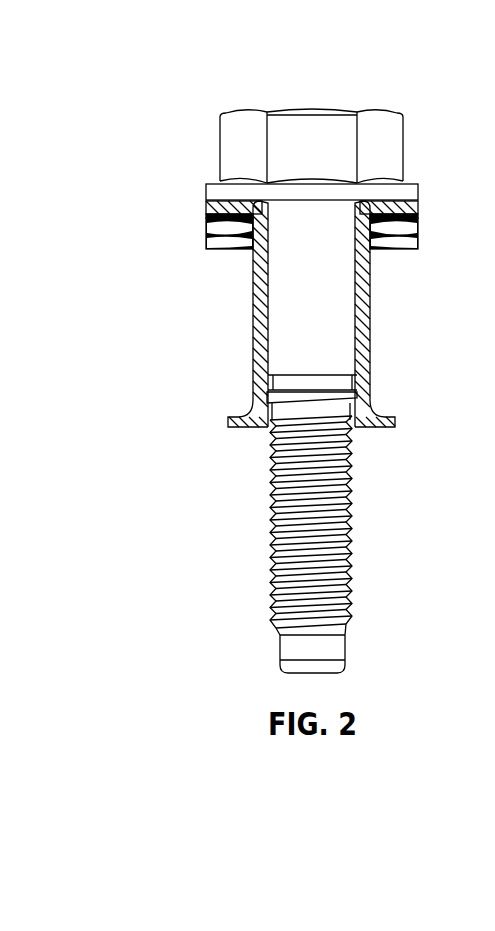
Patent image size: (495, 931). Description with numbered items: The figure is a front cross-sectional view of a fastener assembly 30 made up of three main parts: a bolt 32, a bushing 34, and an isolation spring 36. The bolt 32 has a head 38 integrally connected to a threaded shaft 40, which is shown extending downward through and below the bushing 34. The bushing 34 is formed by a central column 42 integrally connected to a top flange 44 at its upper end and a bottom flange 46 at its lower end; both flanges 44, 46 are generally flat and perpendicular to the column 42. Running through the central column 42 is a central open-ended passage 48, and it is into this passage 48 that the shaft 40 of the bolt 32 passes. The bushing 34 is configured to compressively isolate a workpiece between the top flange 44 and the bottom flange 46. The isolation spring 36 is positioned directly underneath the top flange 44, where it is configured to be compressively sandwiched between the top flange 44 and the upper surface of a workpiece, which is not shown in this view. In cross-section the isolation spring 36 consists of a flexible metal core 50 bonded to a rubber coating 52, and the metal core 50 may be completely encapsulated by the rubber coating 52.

The fastener assembly 30 is at (155, 70).
The bolt 32 is at (395, 155).
The bushing 34 is at (371, 340).
The isolation spring 36 is at (208, 253).
The head 38 is at (345, 108).
The threaded shaft 40 is at (270, 562).
The central column 42 is at (371, 293).
The top flange 44 is at (206, 205).
The bottom flange 46 is at (228, 420).
The central open-ended passage 48 is at (265, 418).
The flexible metal core 50 is at (235, 238).
The rubber coating 52 is at (206, 243).